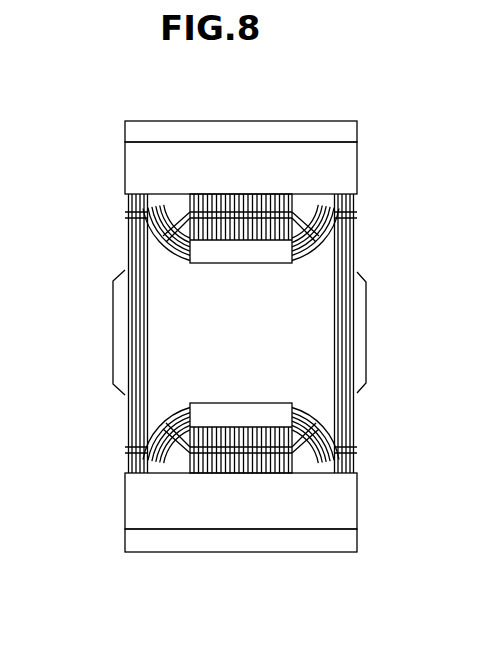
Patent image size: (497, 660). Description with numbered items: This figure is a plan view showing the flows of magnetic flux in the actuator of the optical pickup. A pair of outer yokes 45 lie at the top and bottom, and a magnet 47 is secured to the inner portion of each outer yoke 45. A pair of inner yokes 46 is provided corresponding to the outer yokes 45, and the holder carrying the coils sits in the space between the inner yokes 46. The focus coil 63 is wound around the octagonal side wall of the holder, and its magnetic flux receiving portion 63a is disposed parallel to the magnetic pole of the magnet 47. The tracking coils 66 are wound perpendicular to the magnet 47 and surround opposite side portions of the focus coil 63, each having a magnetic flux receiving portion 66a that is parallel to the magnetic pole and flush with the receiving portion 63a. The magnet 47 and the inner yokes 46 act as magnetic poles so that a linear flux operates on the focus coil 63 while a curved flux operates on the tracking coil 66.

The outer yoke 45 is at (354, 135).
The inner yoke 46 is at (267, 260).
The magnet 47 is at (351, 153).
The focus coil 63 is at (367, 355).
The magnetic flux receiving portion of the focus coil 63a is at (246, 204).
The tracking coil 66 is at (124, 252).
The magnetic flux receiving portion of the tracking coil 66a is at (136, 198).